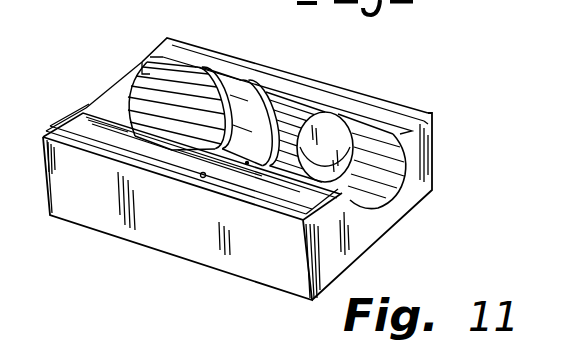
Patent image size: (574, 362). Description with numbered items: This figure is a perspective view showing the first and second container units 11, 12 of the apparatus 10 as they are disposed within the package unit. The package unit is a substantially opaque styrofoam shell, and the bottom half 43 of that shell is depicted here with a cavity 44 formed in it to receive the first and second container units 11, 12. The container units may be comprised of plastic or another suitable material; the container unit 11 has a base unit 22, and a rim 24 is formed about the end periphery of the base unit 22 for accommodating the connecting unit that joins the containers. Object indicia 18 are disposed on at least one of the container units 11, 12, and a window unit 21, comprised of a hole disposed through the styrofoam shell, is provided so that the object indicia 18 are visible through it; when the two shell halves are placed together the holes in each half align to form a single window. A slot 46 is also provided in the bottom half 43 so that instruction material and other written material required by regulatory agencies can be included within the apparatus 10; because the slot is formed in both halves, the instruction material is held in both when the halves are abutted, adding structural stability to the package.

The slot 46 is at (94, 119).
The cavity 44 is at (247, 163).
The rim 24 is at (252, 82).
The first container unit 11 is at (218, 80).
The apparatus 10 is at (306, 85).
The second container unit 12 is at (299, 88).
The object indicia 18 is at (333, 123).
The base unit 22 is at (325, 153).
The window unit 21 is at (398, 168).
The bottom half 43 is at (350, 237).